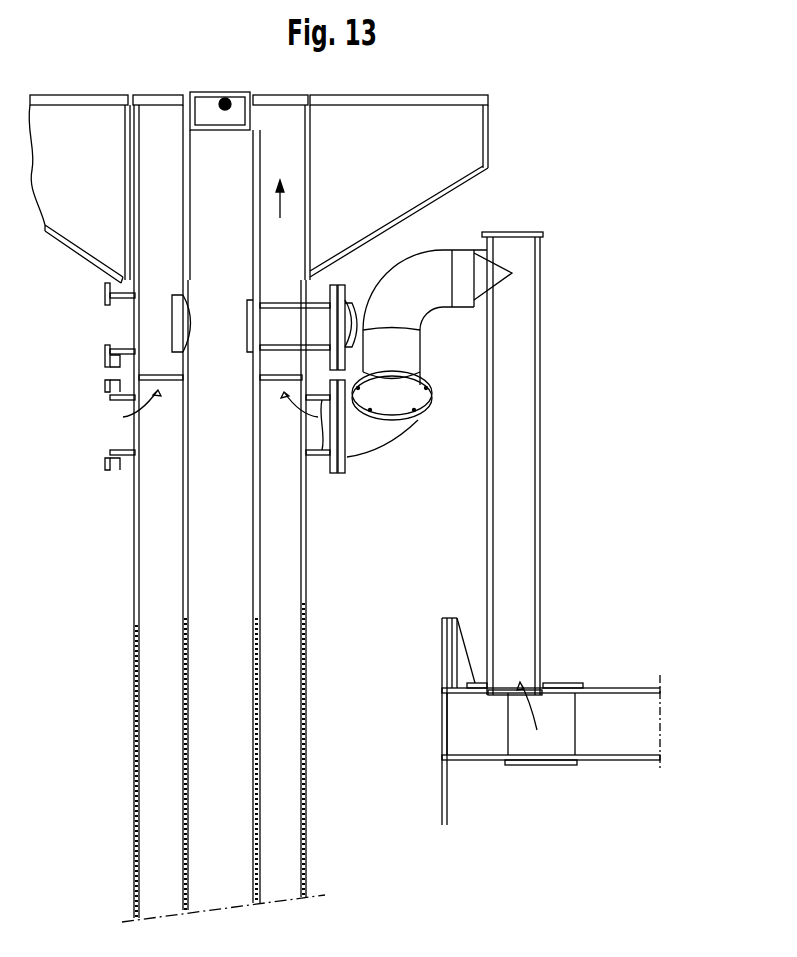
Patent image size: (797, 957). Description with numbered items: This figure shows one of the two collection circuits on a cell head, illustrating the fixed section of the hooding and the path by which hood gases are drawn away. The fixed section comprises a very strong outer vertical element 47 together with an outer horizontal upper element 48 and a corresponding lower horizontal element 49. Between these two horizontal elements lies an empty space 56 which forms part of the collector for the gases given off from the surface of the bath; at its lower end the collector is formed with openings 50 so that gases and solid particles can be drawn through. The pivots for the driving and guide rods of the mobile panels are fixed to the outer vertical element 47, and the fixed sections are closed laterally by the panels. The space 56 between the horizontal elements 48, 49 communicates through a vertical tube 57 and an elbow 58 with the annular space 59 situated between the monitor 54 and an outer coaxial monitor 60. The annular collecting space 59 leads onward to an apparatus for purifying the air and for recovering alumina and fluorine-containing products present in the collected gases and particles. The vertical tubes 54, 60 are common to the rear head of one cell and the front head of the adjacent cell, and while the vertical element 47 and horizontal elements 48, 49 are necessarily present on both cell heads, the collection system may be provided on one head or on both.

The outer vertical element 47 is at (443, 785).
The outer horizontal upper element 48 is at (610, 688).
The lower horizontal element 49 is at (593, 760).
The openings 50 is at (632, 760).
The monitor 54 is at (258, 672).
The space 56 is at (465, 727).
The vertical tube 57 is at (487, 548).
The elbow 58 is at (408, 357).
The annular space 59 is at (288, 603).
The outer coaxial monitor 60 is at (306, 632).